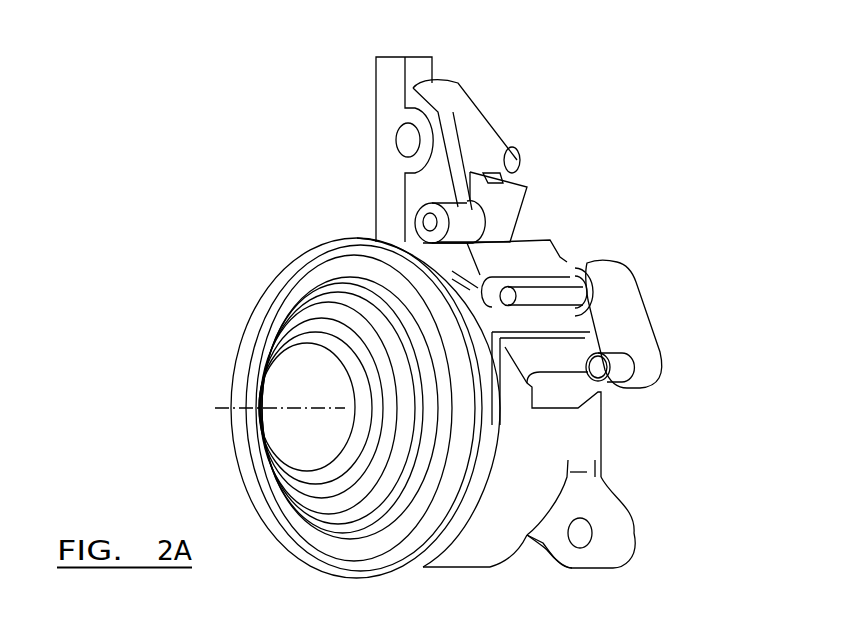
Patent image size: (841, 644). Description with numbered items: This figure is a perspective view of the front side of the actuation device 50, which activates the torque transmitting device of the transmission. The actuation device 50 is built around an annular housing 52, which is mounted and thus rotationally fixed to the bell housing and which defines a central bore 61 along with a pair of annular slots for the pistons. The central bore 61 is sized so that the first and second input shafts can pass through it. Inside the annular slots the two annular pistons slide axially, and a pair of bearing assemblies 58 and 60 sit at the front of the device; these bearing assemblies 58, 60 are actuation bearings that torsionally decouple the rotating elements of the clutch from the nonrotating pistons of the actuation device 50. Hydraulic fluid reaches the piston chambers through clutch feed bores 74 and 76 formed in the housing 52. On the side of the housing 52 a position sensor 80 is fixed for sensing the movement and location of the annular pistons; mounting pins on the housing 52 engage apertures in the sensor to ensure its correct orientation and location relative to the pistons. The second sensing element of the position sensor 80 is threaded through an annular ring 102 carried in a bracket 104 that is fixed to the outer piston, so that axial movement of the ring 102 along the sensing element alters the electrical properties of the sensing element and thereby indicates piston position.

The actuation device 50 is at (605, 133).
The annular housing 52 is at (565, 437).
The bearing assembly 58 is at (330, 552).
The bearing assembly 60 is at (264, 328).
The central bore 61 is at (305, 462).
The clutch feed bore 74 is at (460, 93).
The clutch feed bore 76 is at (519, 156).
The position sensor 80 is at (627, 297).
The annular ring 102 is at (572, 272).
The bracket 104 is at (540, 316).